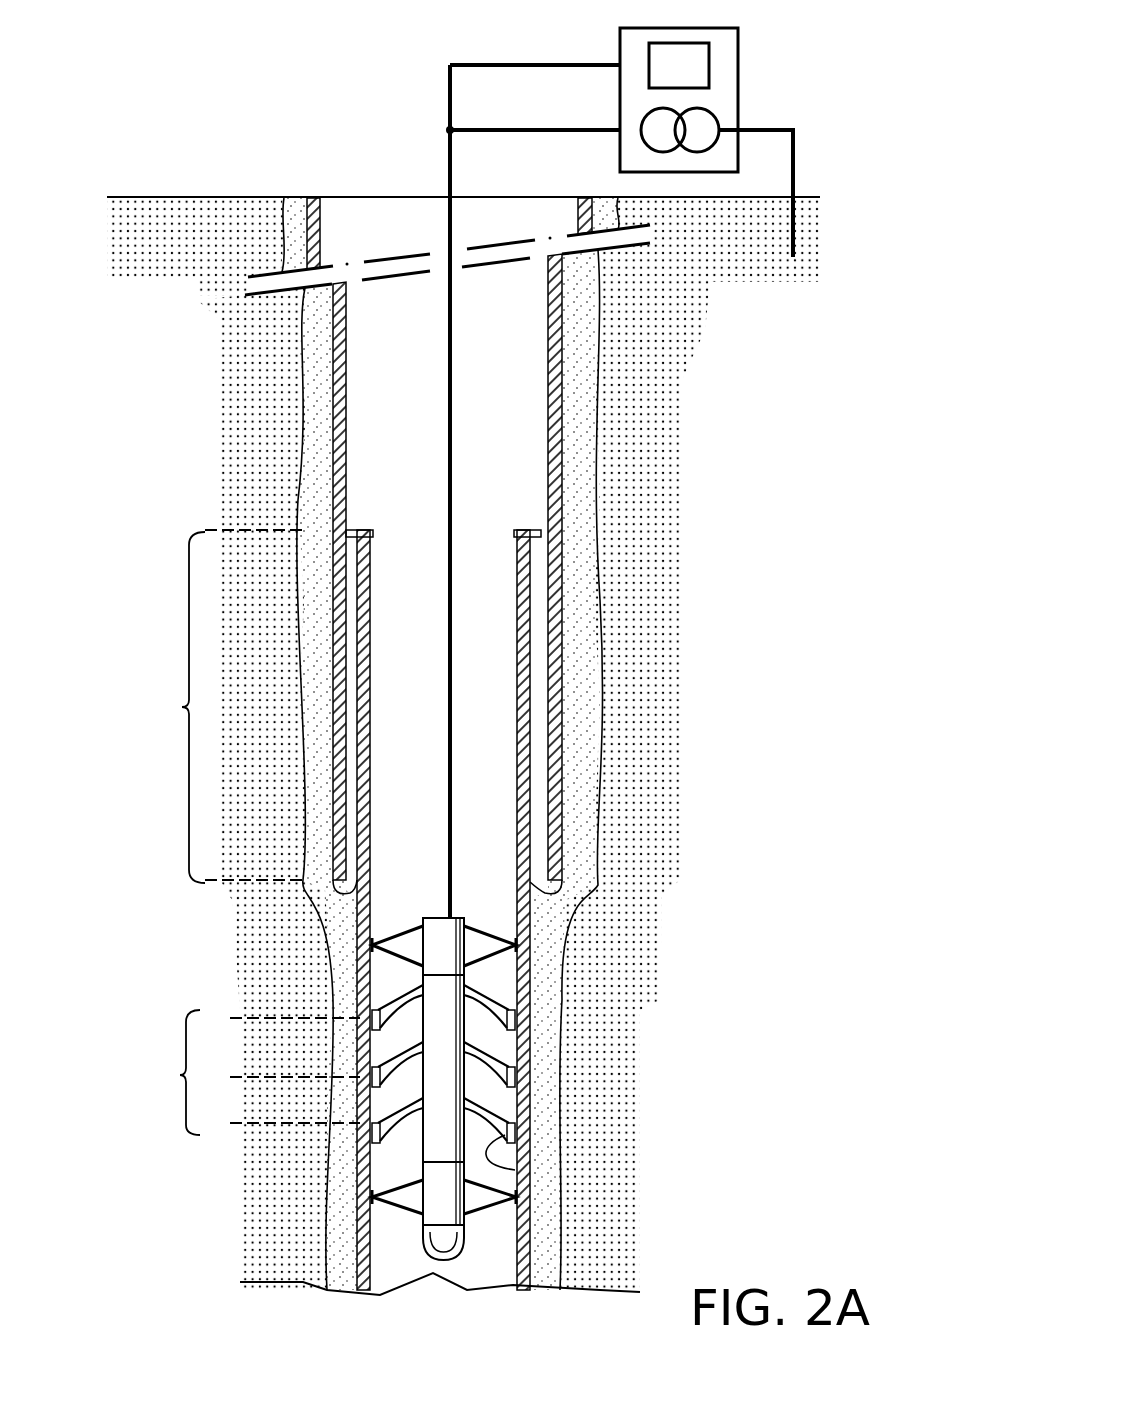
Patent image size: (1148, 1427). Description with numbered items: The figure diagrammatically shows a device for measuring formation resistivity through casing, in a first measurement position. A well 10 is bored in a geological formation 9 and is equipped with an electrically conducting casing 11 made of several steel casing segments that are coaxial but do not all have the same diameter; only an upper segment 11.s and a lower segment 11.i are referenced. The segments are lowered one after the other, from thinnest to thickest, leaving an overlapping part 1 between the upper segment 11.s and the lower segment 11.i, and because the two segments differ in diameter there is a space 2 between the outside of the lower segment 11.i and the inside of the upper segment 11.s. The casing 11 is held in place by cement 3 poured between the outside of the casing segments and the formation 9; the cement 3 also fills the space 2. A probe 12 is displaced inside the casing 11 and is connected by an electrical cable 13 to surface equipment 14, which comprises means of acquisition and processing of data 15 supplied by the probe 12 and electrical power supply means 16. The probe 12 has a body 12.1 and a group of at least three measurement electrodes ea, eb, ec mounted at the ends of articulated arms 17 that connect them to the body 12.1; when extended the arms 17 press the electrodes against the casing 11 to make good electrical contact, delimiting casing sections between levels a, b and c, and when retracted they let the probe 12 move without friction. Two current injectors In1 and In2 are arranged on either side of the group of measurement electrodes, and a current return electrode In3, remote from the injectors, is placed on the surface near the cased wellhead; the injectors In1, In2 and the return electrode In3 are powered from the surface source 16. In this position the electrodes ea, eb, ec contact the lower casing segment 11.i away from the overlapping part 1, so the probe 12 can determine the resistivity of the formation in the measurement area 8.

The geological formation 9 is at (175, 230).
The electric conducting casing 11 is at (313, 192).
The well 10 is at (372, 198).
The electrical cable 13 is at (446, 228).
The equipment 14 is at (620, 50).
The means of acquisition and processing of data 15 is at (702, 54).
The electrical power supply means 16 is at (702, 116).
The current return electrode In3 is at (797, 232).
The cement 3 is at (600, 393).
The upper casing segment 11.s is at (556, 513).
The lower casing segment 11.i is at (532, 684).
The overlapping part 1 is at (229, 706).
The space 2 is at (333, 887).
The probe 12 is at (408, 1228).
The body 12.1 is at (455, 977).
The current injector In1 is at (495, 932).
The current injector In2 is at (500, 1195).
The measurement electrode ea is at (515, 1022).
The measurement electrode eb is at (515, 1080).
The measurement electrode ec is at (515, 1137).
The articulated arm 17 is at (515, 1170).
The measurement area 8 is at (176, 1072).
The casing section limit a is at (281, 1018).
The casing section limit b is at (281, 1077).
The casing section limit c is at (281, 1123).